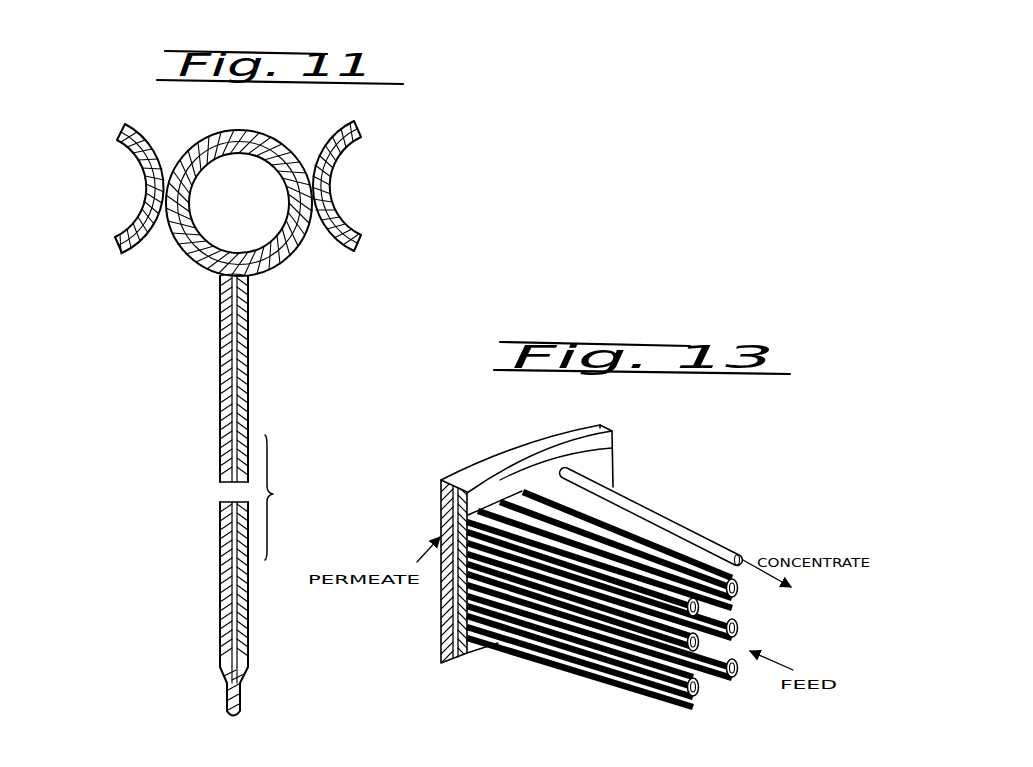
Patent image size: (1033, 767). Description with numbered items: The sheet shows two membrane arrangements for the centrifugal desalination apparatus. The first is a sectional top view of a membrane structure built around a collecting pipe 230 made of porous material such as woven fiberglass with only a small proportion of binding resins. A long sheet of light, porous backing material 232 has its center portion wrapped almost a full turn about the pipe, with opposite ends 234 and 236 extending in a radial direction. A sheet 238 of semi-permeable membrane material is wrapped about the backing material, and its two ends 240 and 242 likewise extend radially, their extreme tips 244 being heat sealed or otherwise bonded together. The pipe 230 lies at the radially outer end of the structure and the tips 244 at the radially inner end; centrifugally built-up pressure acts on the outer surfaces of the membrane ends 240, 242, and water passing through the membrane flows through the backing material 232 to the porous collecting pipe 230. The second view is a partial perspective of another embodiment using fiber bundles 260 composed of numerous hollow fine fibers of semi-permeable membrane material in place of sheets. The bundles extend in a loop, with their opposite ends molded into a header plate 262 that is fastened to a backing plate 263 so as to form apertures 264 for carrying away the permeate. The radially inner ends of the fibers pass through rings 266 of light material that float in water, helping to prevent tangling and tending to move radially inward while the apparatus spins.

In FIG. 11, the collecting pipe 230 is at (262, 152).
In FIG. 11, the porous backing material 232 is at (280, 263).
In FIG. 11, the semi-permeable membrane sheet 238 is at (263, 282).
In FIG. 11, the backing material end 234 is at (231, 372).
In FIG. 11, the backing material end 236 is at (245, 368).
In FIG. 11, the membrane end 240 is at (231, 423).
In FIG. 11, the membrane end 242 is at (245, 425).
In FIG. 11, the membrane tips 244 is at (228, 700).
In FIG. 13, the fiber bundle 260 is at (617, 681).
In FIG. 13, the header plate 262 is at (473, 482).
In FIG. 13, the backing plate 263 is at (441, 641).
In FIG. 13, the apertures 264 is at (446, 516).
In FIG. 13, the rings 266 is at (730, 684).